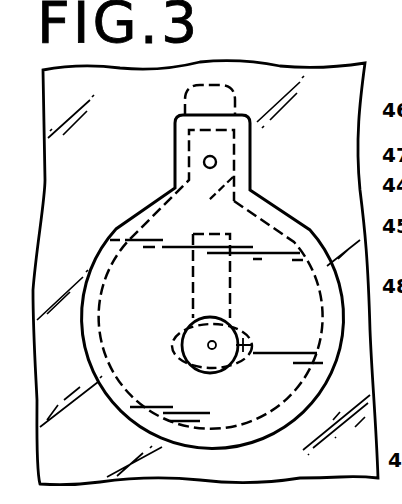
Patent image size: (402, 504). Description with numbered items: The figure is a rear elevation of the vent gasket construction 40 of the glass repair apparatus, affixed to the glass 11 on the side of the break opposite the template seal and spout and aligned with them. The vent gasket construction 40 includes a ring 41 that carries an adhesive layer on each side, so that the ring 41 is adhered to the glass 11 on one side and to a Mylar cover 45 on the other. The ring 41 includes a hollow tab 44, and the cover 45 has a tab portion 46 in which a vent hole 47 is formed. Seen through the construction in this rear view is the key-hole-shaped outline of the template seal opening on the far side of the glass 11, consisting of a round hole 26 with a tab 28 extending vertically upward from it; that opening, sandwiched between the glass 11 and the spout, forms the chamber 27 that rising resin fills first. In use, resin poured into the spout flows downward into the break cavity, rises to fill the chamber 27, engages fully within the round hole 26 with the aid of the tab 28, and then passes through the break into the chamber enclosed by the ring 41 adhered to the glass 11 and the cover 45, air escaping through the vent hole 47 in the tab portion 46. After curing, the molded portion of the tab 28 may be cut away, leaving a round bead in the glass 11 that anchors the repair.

The glass 11 is at (82, 456).
The vent gasket construction 40 is at (281, 206).
The ring 41 is at (224, 279).
The hollow tab 44 is at (213, 199).
The cover 45 is at (125, 276).
The tab portion 46 is at (176, 134).
The vent hole 47 is at (203, 162).
The tab 28 is at (229, 302).
The round hole 26 is at (166, 340).
The chamber 27 is at (217, 353).